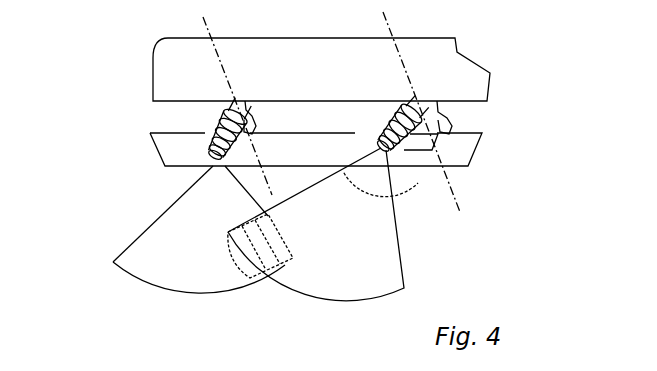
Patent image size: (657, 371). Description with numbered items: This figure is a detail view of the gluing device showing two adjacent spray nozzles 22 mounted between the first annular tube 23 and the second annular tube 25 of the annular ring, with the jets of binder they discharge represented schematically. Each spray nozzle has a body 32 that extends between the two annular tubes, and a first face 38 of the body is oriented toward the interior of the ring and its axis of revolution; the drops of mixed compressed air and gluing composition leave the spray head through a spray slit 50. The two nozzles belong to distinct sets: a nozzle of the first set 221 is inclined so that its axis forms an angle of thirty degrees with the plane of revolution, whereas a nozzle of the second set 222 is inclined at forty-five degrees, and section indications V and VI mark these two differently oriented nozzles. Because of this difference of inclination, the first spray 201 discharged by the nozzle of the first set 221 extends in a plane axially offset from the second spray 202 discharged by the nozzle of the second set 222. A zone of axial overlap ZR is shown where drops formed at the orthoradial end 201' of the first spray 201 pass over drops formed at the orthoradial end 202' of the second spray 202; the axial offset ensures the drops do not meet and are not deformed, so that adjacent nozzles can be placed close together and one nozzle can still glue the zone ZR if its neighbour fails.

The second annular tube 25 is at (452, 73).
The first annular tube 23 is at (462, 148).
The spray nozzle 22 is at (322, 133).
The first set of spray nozzles 221 is at (452, 123).
The second set of spray nozzles 222 is at (198, 141).
The body 32 is at (250, 113).
The first face 38 is at (209, 118).
The spray slit 50 is at (393, 162).
The second spray 202 is at (199, 256).
The orthoradial end of the second spray 202' is at (170, 214).
The first spray 201 is at (316, 253).
The orthoradial end of the first spray 201' is at (304, 205).
The zone of axial overlap ZR is at (260, 243).
The section line V is at (383, 15).
The section line VI is at (207, 31).